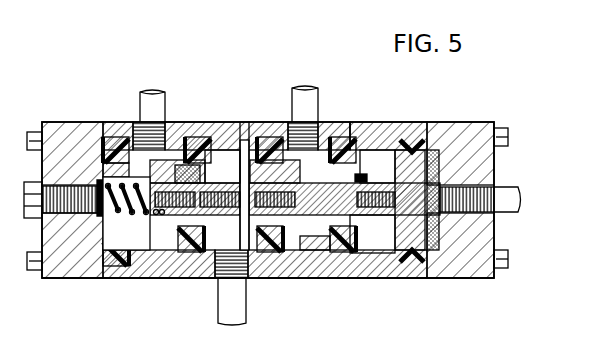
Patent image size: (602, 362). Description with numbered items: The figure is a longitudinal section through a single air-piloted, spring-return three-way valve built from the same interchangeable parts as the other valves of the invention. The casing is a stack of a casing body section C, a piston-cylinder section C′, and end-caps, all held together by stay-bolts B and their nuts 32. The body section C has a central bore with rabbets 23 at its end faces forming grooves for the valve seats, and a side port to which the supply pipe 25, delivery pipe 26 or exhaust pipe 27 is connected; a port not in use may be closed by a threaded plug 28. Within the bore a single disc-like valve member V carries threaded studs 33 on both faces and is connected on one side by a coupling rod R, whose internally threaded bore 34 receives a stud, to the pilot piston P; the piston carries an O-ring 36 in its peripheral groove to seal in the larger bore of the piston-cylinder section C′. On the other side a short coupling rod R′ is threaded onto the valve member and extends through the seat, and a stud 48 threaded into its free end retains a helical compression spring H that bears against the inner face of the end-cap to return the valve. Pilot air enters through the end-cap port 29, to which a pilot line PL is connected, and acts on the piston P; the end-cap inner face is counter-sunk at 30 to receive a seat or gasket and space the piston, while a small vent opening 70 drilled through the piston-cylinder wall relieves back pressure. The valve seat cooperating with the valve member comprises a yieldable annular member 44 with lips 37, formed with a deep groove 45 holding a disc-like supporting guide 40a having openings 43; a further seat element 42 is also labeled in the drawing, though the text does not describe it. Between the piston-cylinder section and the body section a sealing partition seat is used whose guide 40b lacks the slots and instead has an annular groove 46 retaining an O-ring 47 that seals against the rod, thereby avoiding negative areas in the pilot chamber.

The nut 32 is at (36, 130).
The stay-bolt B is at (28, 136).
The casing body section C is at (120, 125).
The piston-cylinder section C′ is at (382, 128).
The exhaust pipe 27 is at (150, 98).
The supply pipe 25 is at (300, 98).
The delivery pipe 26 is at (240, 305).
The annular member 44 is at (198, 132).
The vent opening 70 is at (356, 128).
The rabbet 23 is at (430, 130).
The port 29 is at (76, 182).
The counter-sunk portion 30 is at (433, 170).
The threaded plug 28 is at (32, 198).
The annular groove 45 is at (172, 165).
The openings or slots 43 is at (185, 172).
The short coupling rod R′ is at (226, 185).
The supporting guide 40a is at (300, 178).
The valve coupling rod R is at (318, 190).
The annular groove 46 is at (368, 176).
The O-ring 47 is at (365, 176).
The helical compression spring H is at (110, 222).
The stud 48 is at (156, 216).
The valve member V is at (240, 222).
The bead or lip 37 is at (320, 238).
The threaded stud 33 is at (375, 208).
The supporting guide 40b is at (355, 240).
The piston head P is at (406, 222).
The pilot line PL is at (514, 206).
The internally threaded bore 34 is at (150, 258).
The bushing 42 is at (170, 260).
The O-ring 36 is at (384, 276).